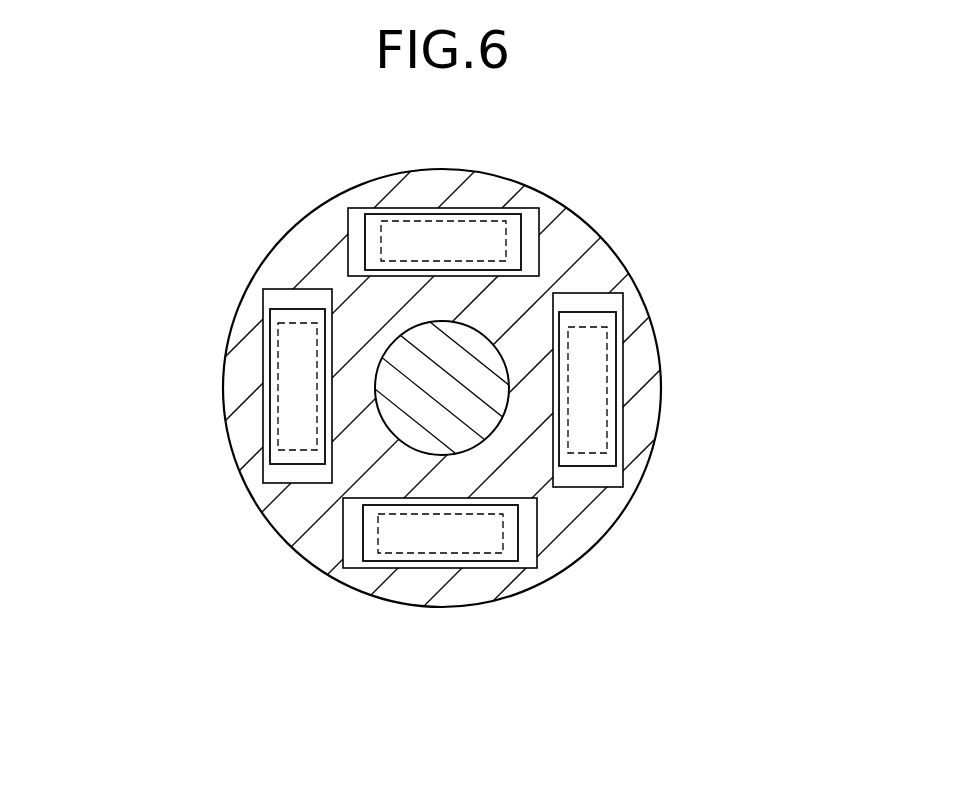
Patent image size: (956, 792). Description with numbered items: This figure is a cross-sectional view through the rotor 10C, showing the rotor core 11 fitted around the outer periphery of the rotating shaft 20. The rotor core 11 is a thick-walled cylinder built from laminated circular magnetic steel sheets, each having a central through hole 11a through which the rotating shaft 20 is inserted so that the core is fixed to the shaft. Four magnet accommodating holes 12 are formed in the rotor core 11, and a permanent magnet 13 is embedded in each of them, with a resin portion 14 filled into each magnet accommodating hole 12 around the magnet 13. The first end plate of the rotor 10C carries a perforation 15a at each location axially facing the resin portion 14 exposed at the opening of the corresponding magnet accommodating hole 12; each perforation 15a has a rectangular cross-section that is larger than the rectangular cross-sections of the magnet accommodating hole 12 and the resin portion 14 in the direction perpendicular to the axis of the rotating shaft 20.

The rotor 10C is at (478, 400).
The rotor core 11 is at (600, 268).
The through hole 11a is at (482, 343).
The magnet accommodating hole 12 is at (398, 216).
The magnet 13 is at (448, 221).
The resin portion 14 is at (395, 245).
The perforation 15a is at (539, 240).
The rotating shaft 20 is at (427, 358).